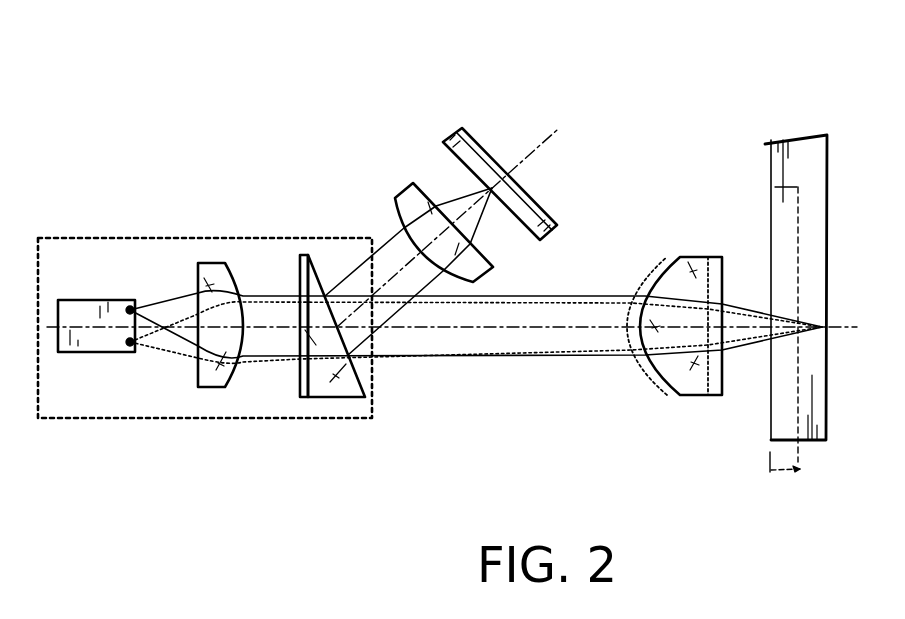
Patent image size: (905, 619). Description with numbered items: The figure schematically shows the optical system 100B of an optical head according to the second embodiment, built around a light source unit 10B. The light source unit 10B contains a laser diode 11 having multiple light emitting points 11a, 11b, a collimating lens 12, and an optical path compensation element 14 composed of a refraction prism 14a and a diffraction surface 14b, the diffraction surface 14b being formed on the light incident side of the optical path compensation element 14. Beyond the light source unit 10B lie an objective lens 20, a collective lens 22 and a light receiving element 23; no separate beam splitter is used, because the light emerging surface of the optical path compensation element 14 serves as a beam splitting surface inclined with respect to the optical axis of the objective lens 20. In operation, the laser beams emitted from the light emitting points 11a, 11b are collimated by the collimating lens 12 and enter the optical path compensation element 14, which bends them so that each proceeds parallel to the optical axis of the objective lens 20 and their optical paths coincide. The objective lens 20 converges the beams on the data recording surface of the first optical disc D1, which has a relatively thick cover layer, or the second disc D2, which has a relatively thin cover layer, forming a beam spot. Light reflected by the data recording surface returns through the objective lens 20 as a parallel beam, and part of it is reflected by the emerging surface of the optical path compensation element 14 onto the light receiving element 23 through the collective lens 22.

The optical system 100B is at (645, 101).
The light source unit 10B is at (220, 238).
The laser diode 11 is at (114, 359).
The light emitting point 11a is at (128, 308).
The light emitting point 11b is at (130, 346).
The collimating lens 12 is at (216, 373).
The optical path compensation element 14 is at (361, 387).
The refraction prism 14a is at (303, 473).
The diffraction surface 14b is at (300, 399).
The objective lens 20 is at (678, 383).
The collective lens 22 is at (473, 269).
The light receiving element 23 is at (525, 203).
The first optical disc D1 is at (819, 267).
The second disc D2 is at (762, 453).